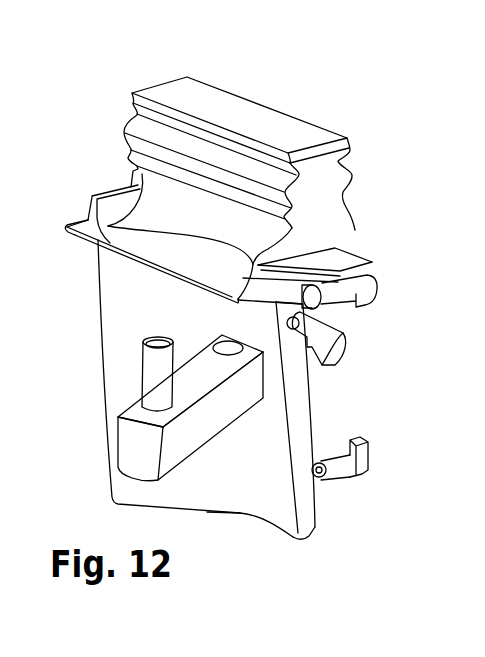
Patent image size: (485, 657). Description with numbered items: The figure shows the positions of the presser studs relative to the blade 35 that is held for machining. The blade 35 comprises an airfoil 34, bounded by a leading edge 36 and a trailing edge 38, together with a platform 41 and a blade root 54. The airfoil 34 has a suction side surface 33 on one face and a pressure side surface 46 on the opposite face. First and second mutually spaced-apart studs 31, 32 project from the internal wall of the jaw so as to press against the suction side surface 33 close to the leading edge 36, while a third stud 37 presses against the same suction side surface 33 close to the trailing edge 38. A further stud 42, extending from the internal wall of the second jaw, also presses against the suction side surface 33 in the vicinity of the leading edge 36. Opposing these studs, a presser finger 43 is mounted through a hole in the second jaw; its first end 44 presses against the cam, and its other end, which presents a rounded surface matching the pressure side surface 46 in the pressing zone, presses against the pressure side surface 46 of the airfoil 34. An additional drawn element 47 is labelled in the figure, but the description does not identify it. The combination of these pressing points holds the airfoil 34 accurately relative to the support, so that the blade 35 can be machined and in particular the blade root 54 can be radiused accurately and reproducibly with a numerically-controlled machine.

The blade 35 is at (285, 82).
The blade root 54 is at (320, 197).
The platform 41 is at (66, 225).
The third stud 37 is at (186, 294).
The trailing edge 38 is at (112, 491).
The airfoil 34 is at (232, 523).
The pressure side surface 46 is at (257, 484).
The leading edge 36 is at (307, 540).
The suction side surface 33 is at (297, 423).
The pin 47 is at (157, 373).
The first end 44 is at (147, 448).
The presser finger 43 is at (190, 435).
The first stud 31 is at (367, 280).
The stud 42 is at (330, 356).
The second stud 32 is at (370, 455).